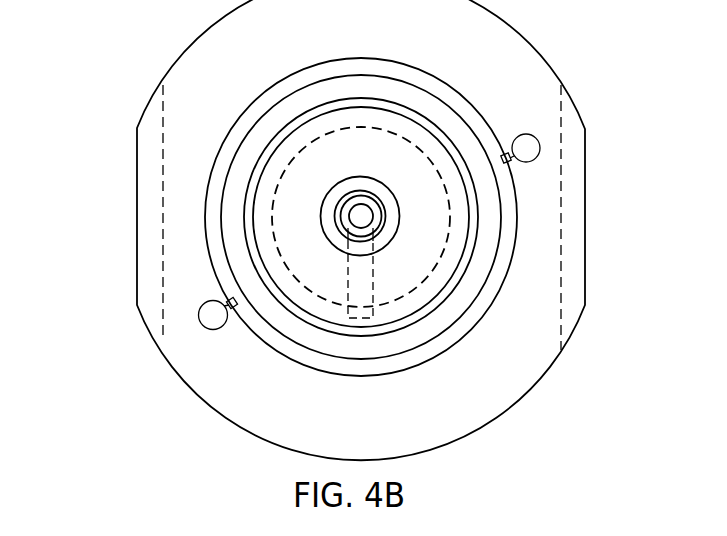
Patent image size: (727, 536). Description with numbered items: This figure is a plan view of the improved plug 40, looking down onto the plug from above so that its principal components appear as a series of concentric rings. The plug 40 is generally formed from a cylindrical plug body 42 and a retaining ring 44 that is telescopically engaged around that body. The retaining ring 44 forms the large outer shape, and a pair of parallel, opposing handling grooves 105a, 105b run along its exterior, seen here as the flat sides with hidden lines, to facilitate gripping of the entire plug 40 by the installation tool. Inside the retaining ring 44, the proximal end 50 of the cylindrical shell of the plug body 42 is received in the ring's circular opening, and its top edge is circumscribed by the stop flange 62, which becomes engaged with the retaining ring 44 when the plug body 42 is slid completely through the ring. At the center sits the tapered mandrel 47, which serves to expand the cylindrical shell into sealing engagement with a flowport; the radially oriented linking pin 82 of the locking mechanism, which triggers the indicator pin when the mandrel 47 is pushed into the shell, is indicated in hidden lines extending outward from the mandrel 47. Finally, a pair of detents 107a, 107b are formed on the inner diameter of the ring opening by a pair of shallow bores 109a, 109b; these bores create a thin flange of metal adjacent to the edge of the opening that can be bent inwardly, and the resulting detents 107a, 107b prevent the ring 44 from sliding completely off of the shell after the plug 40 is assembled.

The plug 40 is at (158, 50).
The retaining ring 44 is at (279, 393).
The stop flange 62 is at (440, 115).
The plug body 42 is at (390, 157).
The proximal end 50 is at (358, 147).
The tapered mandrel 47 is at (432, 230).
The linking pin 82 is at (375, 308).
The handling groove 105a is at (163, 240).
The handling groove 105b is at (562, 265).
The detent 107a is at (233, 309).
The detent 107b is at (507, 152).
The shallow bore 109a is at (200, 322).
The shallow bore 109b is at (532, 134).